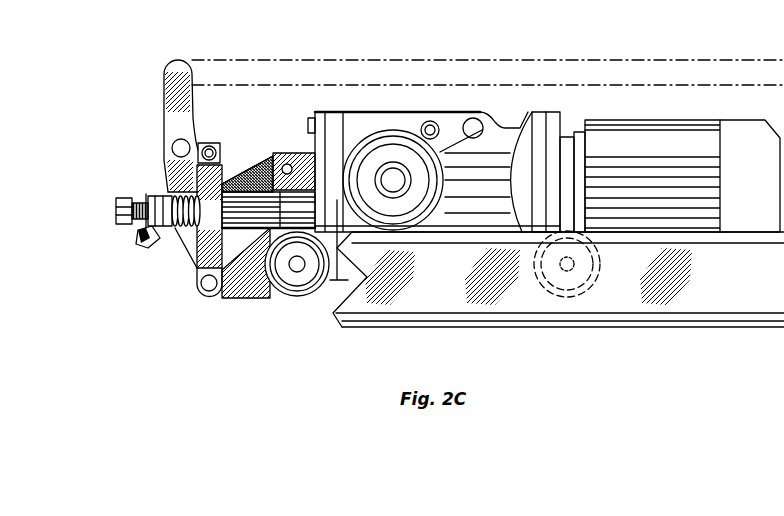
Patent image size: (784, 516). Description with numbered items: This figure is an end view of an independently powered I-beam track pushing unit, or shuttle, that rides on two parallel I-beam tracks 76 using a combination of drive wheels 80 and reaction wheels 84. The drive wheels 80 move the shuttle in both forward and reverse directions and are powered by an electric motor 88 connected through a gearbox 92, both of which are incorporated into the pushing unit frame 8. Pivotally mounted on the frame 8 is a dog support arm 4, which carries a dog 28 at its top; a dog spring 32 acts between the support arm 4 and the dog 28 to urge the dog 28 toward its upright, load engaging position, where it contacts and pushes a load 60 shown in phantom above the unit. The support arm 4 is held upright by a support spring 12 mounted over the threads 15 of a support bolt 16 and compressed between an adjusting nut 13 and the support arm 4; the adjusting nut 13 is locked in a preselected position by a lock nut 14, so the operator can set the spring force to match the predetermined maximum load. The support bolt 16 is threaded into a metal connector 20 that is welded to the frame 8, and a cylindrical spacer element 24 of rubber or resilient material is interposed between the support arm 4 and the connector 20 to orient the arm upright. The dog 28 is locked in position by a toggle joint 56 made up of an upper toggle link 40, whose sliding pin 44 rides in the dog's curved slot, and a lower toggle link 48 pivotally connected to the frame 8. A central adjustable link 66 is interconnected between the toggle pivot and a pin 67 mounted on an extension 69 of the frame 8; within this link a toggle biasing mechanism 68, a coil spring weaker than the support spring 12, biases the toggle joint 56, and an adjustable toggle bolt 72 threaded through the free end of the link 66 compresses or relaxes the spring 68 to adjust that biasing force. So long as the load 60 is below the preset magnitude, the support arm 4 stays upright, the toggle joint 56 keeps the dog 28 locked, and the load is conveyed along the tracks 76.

The dog support arm 4 is at (203, 271).
The pushing unit frame 8 is at (348, 250).
The support spring 12 is at (152, 196).
The adjusting nut 13 is at (158, 198).
The lock nut 14 is at (172, 200).
The threads 15 is at (140, 240).
The support bolt 16 is at (117, 211).
The metal connector 20 is at (303, 215).
The spacer element 24 is at (248, 212).
The dog 28 is at (172, 70).
The dog spring 32 is at (211, 145).
The upper toggle link 40 is at (170, 192).
The sliding pin 44 is at (173, 142).
The lower toggle link 48 is at (188, 252).
The toggle joint 56 is at (157, 292).
The load 60 is at (338, 67).
The central adjustable link 66 is at (242, 168).
The pin 67 is at (287, 163).
The toggle biasing mechanism 68 is at (257, 172).
The extension 69 is at (304, 158).
The adjustable toggle bolt 72 is at (160, 233).
The I-beam tracks 76 is at (737, 283).
The drive wheels 80 is at (398, 158).
The reaction wheels 84 is at (299, 278).
The electric motor 88 is at (643, 140).
The gearbox 92 is at (490, 160).